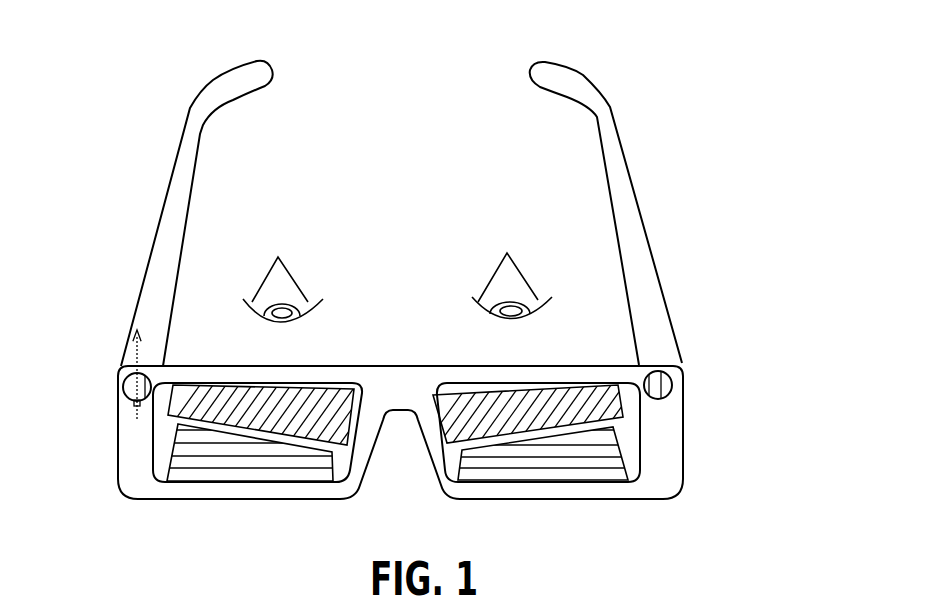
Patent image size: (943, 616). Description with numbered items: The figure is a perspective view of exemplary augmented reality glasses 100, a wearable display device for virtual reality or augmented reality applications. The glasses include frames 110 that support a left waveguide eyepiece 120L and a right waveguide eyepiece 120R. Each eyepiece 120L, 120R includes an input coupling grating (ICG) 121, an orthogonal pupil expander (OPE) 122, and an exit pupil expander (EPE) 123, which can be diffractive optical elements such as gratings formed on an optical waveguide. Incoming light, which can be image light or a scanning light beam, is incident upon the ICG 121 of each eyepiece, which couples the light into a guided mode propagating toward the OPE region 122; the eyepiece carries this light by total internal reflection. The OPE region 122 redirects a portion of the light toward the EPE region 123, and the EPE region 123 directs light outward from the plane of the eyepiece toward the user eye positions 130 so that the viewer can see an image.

The augmented reality glasses 100 is at (722, 45).
The frames 110 is at (198, 147).
The left waveguide eyepiece 120L is at (137, 450).
The right waveguide eyepiece 120R is at (603, 395).
The input coupling grating (ICG) 121 is at (667, 373).
The orthogonal pupil expander (OPE) 122 is at (585, 387).
The exit pupil expander (EPE) 123 is at (572, 470).
The user eye positions 130 is at (313, 283).